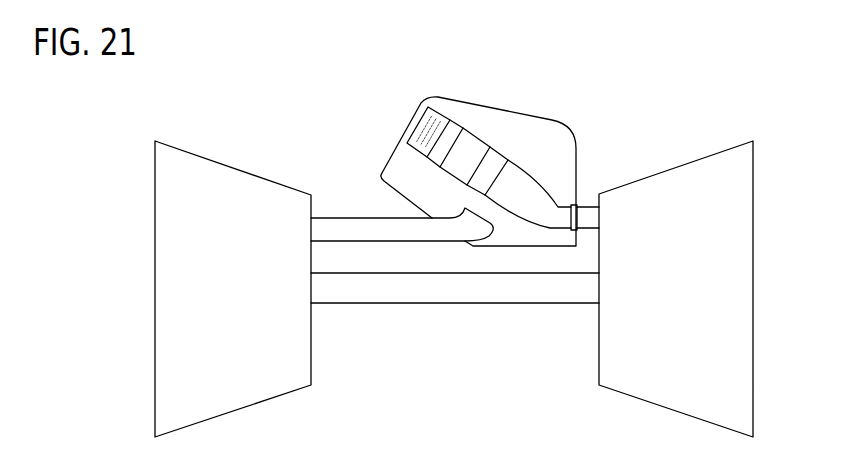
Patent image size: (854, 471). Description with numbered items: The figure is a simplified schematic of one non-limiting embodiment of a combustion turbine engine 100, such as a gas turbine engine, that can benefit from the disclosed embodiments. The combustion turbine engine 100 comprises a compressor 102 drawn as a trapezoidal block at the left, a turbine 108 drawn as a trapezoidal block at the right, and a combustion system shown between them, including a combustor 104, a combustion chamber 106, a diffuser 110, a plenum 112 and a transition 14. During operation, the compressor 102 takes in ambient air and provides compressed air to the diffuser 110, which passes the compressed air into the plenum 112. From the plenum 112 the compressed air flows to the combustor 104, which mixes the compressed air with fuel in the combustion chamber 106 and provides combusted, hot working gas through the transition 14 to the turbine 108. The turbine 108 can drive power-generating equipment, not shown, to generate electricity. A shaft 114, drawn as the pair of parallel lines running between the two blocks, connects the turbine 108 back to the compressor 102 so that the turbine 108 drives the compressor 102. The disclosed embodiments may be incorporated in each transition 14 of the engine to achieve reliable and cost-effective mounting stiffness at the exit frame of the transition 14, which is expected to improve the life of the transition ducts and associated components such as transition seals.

The combustion turbine engine 100 is at (673, 108).
The compressor 102 is at (258, 308).
The turbine 108 is at (700, 308).
The diffuser 110 is at (353, 217).
The shaft 114 is at (450, 303).
The plenum 112 is at (504, 136).
The transition 14 is at (530, 174).
The combustion chamber 106 is at (464, 132).
The combustor 104 is at (425, 132).